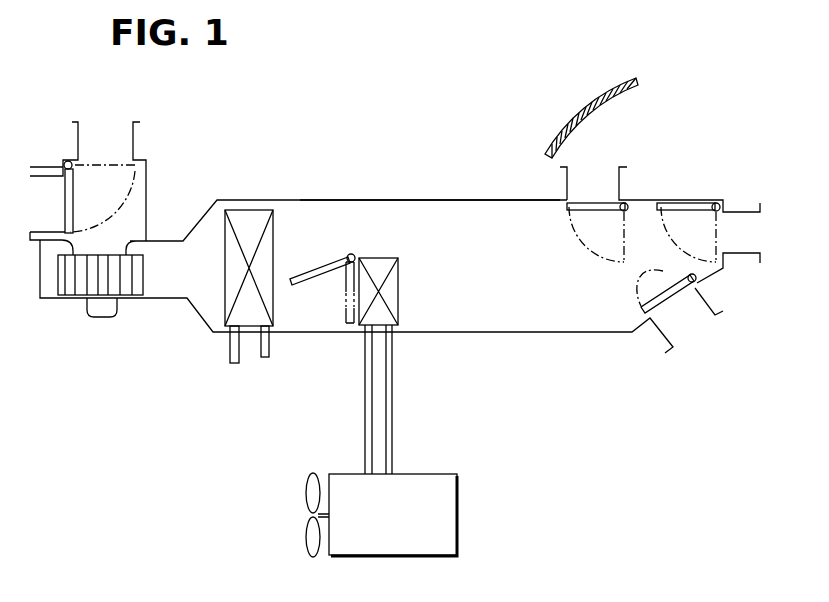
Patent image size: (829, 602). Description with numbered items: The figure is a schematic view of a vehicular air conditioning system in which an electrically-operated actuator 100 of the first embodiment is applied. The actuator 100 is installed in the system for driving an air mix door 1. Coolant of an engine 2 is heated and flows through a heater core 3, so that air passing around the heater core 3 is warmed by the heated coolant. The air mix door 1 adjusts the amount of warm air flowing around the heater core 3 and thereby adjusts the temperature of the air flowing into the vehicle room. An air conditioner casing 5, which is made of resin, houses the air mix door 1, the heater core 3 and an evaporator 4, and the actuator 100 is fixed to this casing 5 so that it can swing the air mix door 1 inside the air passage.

The air mix door 1 is at (305, 284).
The engine 2 is at (460, 514).
The heater core 3 is at (398, 297).
The evaporator 4 is at (247, 217).
The air conditioner casing 5 is at (452, 199).
The actuator 100 is at (351, 254).